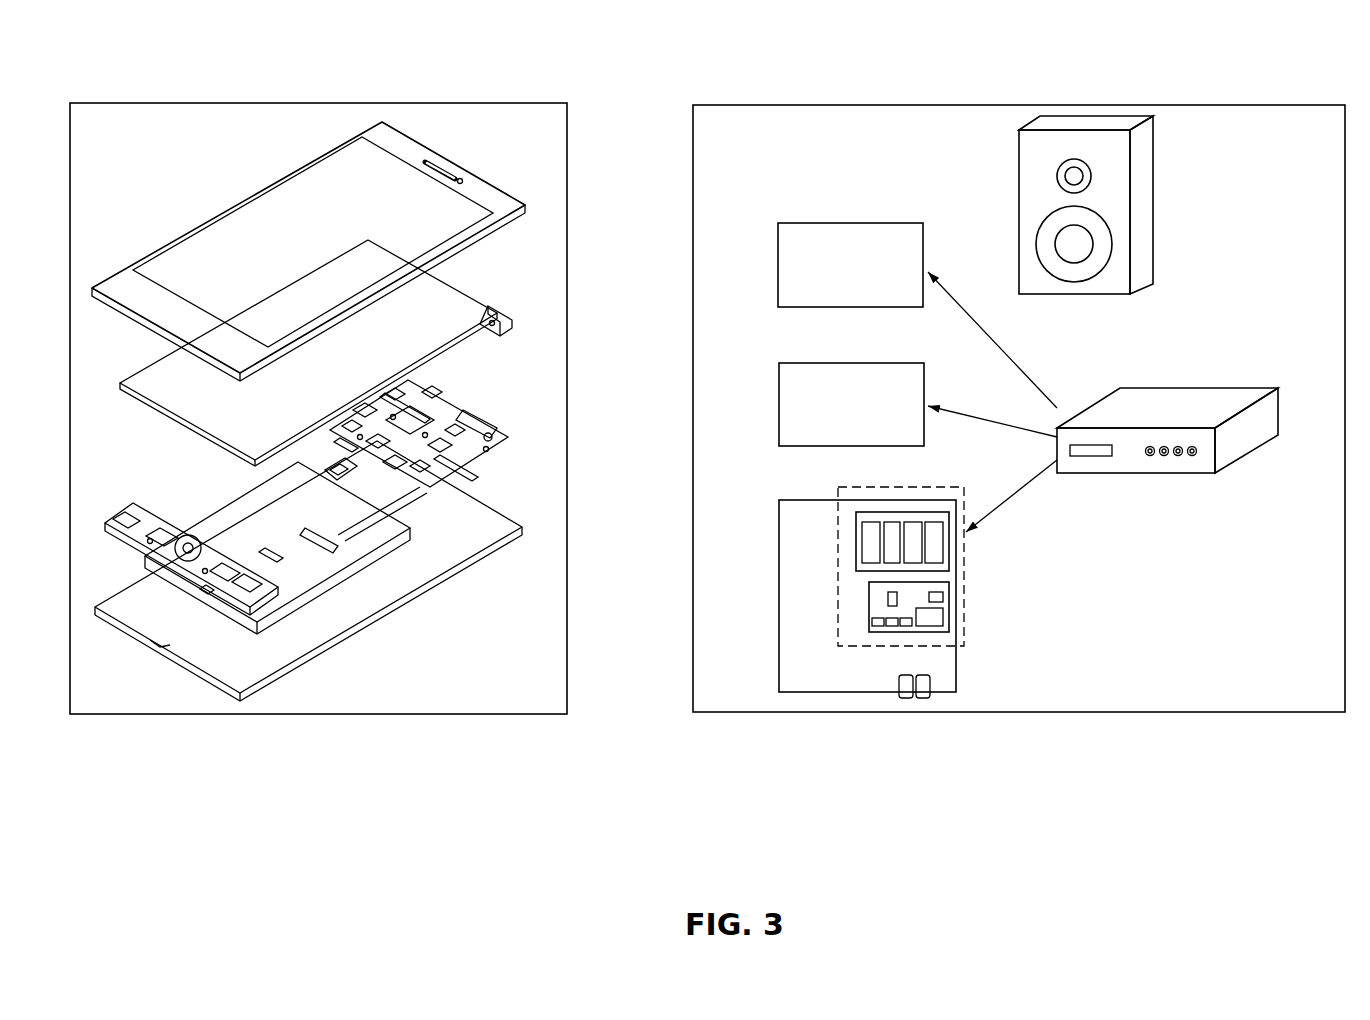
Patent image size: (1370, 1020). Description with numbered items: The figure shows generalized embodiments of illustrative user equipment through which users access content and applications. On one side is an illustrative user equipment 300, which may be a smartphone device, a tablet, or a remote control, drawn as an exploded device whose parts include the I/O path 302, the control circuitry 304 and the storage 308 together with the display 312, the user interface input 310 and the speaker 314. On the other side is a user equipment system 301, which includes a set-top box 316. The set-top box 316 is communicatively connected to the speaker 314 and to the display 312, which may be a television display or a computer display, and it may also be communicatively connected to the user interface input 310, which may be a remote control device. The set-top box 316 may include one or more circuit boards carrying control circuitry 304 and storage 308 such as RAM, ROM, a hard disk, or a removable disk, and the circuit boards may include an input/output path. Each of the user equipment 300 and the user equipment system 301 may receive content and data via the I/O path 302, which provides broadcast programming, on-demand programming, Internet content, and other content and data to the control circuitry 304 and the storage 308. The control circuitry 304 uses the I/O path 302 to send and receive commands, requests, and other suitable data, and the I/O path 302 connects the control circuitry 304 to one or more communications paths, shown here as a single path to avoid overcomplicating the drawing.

The user equipment 300 is at (163, 50).
The user equipment system 301 is at (1222, 63).
The I/O path 302 is at (273, 553).
The control circuitry 304 is at (833, 613).
The storage 308 is at (852, 537).
The user interface input 310 is at (778, 263).
The display 312 is at (778, 370).
The speaker 314 is at (1019, 210).
The set-top box 316 is at (1160, 388).